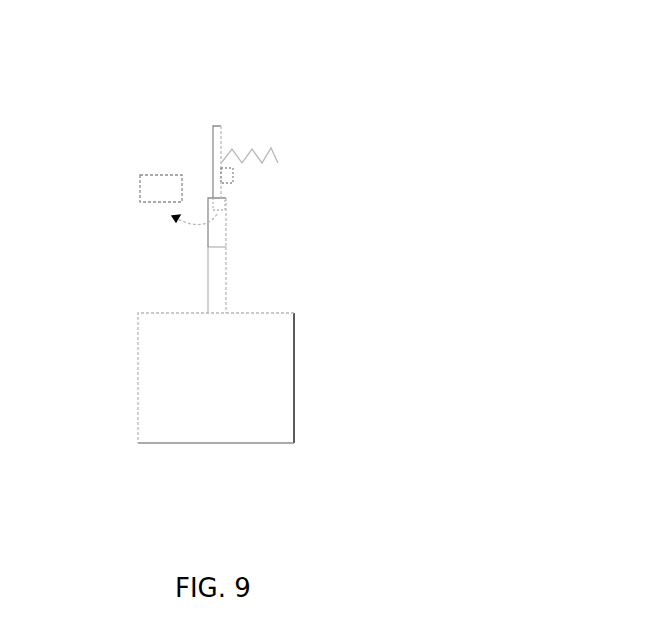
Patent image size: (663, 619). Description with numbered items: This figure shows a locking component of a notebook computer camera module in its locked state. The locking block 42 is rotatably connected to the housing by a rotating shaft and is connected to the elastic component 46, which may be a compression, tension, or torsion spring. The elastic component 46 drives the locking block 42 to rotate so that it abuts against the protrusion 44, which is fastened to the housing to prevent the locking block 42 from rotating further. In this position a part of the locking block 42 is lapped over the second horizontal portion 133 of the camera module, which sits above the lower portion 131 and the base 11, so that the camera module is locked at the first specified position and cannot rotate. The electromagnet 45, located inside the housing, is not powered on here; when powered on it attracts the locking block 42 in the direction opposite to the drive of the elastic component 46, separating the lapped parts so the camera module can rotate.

The base 11 is at (230, 438).
The lower rod section 131 is at (222, 282).
The second horizontal portion 133 is at (222, 232).
The locking block 42 is at (215, 138).
The protrusion 44 is at (233, 176).
The electromagnet 45 is at (143, 190).
The elastic component 46 is at (250, 148).